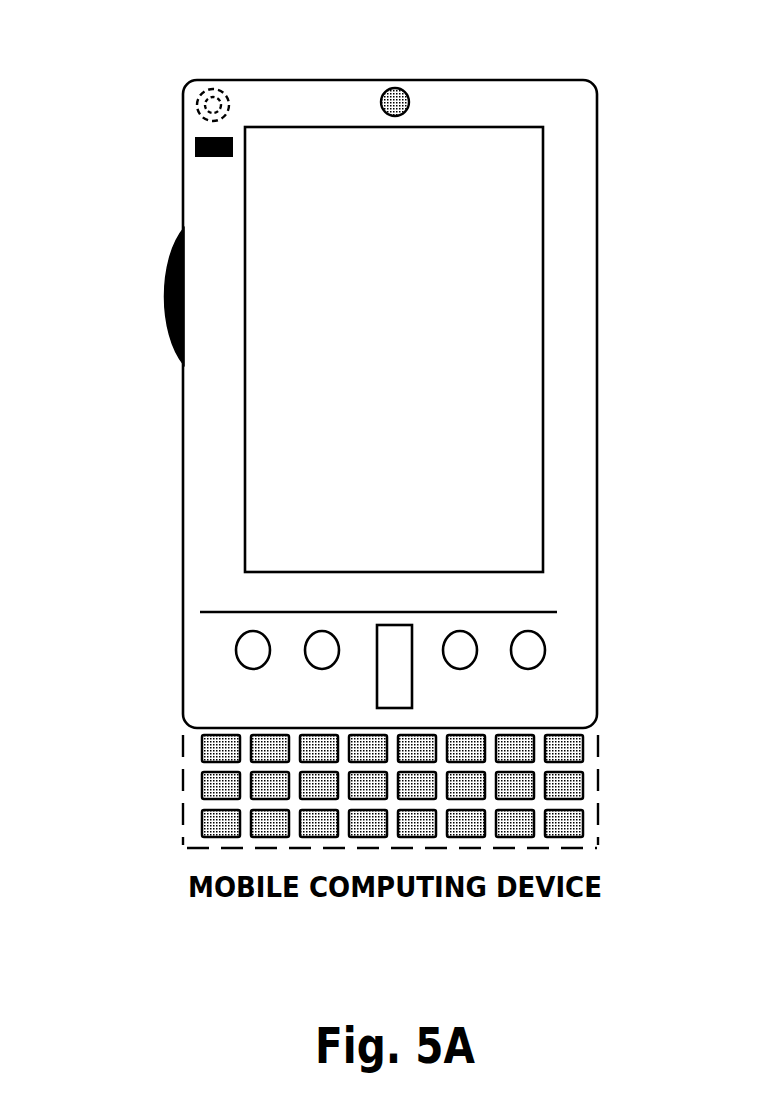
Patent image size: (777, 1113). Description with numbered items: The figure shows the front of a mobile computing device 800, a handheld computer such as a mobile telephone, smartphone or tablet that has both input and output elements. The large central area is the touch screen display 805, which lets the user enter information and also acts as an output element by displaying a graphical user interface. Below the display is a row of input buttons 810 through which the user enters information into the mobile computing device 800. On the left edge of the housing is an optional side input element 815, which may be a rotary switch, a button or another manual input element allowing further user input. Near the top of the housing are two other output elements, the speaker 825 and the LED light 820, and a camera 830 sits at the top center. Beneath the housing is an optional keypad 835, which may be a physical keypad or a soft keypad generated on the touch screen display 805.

The mobile computing device 800 is at (597, 95).
The touch screen display 805 is at (270, 509).
The input buttons 810 is at (530, 661).
The side input element 815 is at (164, 303).
The LED light 820 is at (195, 141).
The speaker 825 is at (196, 98).
The camera 830 is at (401, 89).
The keypad 835 is at (183, 820).